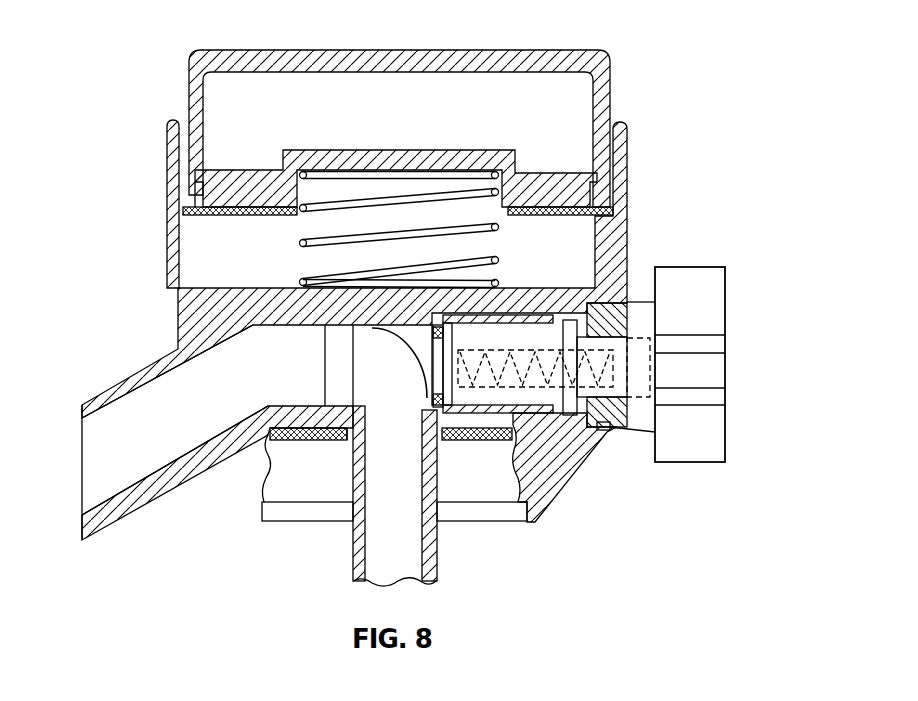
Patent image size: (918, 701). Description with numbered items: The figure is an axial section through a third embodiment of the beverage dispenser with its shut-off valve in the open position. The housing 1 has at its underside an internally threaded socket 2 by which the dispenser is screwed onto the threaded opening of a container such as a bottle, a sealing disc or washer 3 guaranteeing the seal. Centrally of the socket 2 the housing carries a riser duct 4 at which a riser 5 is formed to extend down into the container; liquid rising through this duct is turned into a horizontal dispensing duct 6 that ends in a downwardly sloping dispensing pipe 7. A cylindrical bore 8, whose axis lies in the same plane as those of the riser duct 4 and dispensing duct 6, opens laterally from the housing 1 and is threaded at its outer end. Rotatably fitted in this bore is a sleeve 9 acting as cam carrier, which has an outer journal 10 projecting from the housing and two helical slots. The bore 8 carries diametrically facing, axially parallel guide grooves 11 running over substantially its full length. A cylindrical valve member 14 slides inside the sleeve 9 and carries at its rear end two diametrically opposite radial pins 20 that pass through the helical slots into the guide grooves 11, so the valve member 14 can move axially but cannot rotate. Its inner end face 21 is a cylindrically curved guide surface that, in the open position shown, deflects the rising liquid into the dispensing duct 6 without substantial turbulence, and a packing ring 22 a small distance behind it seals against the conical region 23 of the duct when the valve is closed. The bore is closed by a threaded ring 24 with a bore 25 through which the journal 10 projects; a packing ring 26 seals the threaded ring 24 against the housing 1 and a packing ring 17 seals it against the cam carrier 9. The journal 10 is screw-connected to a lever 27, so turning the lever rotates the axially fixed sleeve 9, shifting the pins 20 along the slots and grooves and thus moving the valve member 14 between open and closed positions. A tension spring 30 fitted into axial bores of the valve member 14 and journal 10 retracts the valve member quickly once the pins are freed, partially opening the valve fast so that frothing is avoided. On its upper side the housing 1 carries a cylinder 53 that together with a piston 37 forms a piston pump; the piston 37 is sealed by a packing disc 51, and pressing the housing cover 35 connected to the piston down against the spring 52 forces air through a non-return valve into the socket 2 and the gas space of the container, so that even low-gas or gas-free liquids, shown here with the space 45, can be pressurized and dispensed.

The housing 1 is at (223, 477).
The internally threaded socket 2 is at (262, 512).
The sealing disc or washer 3 is at (290, 442).
The riser duct 4 is at (392, 445).
The riser 5 is at (370, 576).
The dispensing duct 6 is at (288, 358).
The dispensing pipe 7 is at (97, 503).
The cylindrical bore 8 is at (462, 414).
The sleeve 9 is at (498, 432).
The journal 10 is at (618, 388).
The guide grooves 11 is at (518, 316).
The valve member 14 is at (567, 412).
The packing ring 17 is at (600, 430).
The pins 20 is at (557, 316).
The inner end face 21 is at (373, 383).
The packing ring 22 is at (413, 400).
The conical region 23 is at (340, 442).
The threaded ring 24 is at (618, 298).
The bore 25 is at (617, 322).
The packing ring 26 is at (613, 425).
The lever 27 is at (713, 427).
The tension spring 30 is at (490, 352).
The housing cover 35 is at (526, 63).
The piston 37 is at (556, 182).
The chamber 45 is at (280, 120).
The packing disc 51 is at (185, 211).
The spring 52 is at (288, 246).
The cylinder 53 is at (167, 172).